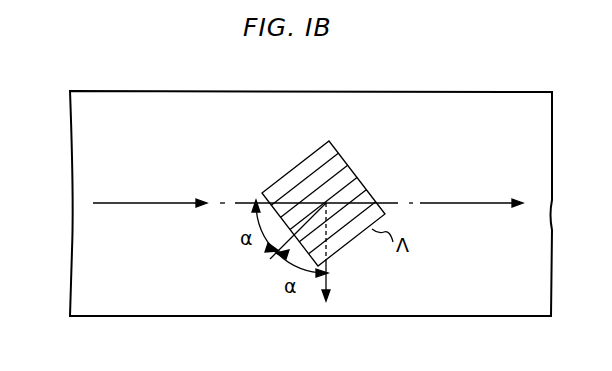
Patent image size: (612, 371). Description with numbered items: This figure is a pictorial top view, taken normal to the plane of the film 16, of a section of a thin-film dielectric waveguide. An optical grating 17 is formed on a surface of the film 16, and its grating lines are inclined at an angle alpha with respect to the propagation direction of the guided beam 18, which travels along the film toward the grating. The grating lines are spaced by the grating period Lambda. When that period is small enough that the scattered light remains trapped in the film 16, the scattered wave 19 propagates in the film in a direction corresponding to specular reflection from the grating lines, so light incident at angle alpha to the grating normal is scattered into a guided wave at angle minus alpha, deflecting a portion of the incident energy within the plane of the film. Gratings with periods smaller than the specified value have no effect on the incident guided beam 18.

The film 16 is at (86, 143).
The optical grating 17 is at (313, 160).
The guided beam 18 is at (146, 204).
The scattered wave 19 is at (329, 283).